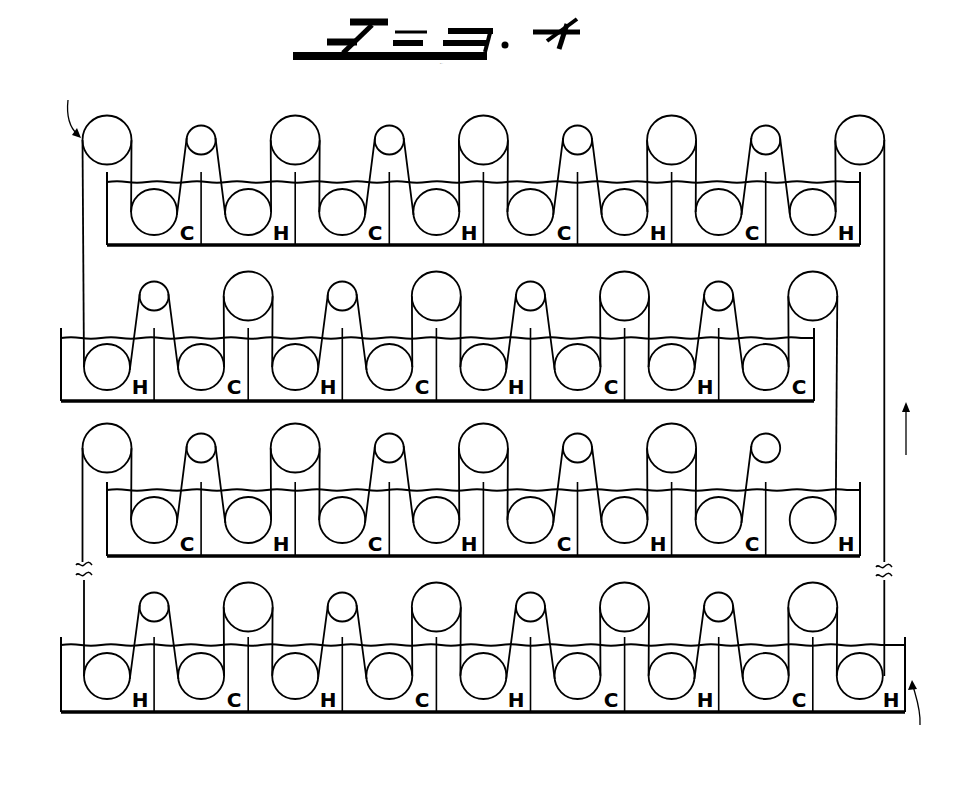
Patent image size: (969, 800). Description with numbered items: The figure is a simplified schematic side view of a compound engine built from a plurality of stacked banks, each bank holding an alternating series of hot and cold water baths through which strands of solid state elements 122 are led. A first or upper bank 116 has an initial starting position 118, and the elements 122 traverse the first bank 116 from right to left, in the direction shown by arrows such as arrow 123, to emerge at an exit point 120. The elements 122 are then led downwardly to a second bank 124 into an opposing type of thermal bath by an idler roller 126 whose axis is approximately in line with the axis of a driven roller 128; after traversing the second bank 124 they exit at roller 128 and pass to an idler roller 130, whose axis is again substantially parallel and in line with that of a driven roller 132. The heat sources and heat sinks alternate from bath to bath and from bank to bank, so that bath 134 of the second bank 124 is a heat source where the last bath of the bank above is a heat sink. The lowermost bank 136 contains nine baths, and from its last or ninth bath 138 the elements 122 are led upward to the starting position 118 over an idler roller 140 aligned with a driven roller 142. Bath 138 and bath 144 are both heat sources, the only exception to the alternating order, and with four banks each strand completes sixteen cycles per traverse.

The first bank 116 is at (866, 217).
The initial starting position 118 is at (889, 132).
The exit point 120 is at (72, 108).
The solid state elements 122 is at (510, 162).
The web direction 123 is at (61, 284).
The second bank 124 is at (808, 375).
The idler roller 126 is at (95, 367).
The driven roller 128 is at (117, 132).
The idler roller 130 is at (825, 518).
The driven roller 132 is at (123, 228).
The bath 134 is at (143, 350).
The lowermost bank 136 is at (915, 578).
The ninth bath 138 is at (892, 660).
The idler roller 140 is at (860, 680).
The driven roller 142 is at (827, 136).
The bath 144 is at (780, 200).